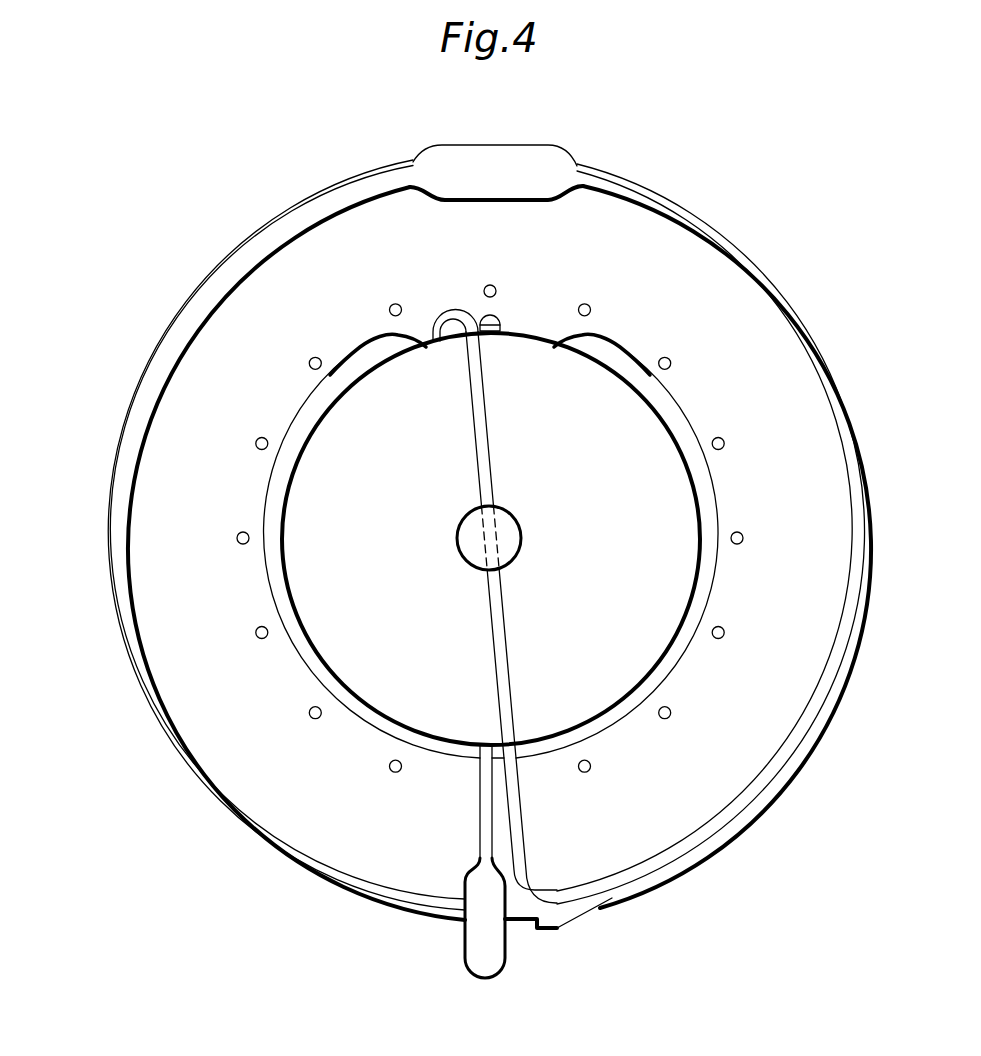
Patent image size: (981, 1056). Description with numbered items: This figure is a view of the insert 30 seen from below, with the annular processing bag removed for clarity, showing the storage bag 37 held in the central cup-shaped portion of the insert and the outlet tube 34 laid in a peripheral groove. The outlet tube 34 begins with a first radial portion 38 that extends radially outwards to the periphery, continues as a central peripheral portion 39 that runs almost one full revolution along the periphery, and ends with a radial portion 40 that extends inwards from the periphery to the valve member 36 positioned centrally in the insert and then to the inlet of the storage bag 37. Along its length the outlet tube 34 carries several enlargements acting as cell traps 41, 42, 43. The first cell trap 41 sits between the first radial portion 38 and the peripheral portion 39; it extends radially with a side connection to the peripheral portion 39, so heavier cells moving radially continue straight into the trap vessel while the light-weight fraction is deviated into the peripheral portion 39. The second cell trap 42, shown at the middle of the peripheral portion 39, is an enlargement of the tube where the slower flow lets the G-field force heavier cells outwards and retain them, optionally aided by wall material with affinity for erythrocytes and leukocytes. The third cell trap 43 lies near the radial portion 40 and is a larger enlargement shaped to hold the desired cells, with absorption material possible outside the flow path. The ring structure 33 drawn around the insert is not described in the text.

The insert 30 is at (806, 261).
The outer ring 33 is at (148, 704).
The outlet tube 34 is at (126, 622).
The valve member 36 is at (466, 538).
The storage bag 37 is at (270, 546).
The first radial portion 38 is at (481, 812).
The central peripheral portion 39 is at (134, 463).
The radial portion 40 is at (512, 805).
The cell trap 41 is at (466, 962).
The cell trap 42 is at (447, 162).
The cell trap 43 is at (560, 932).